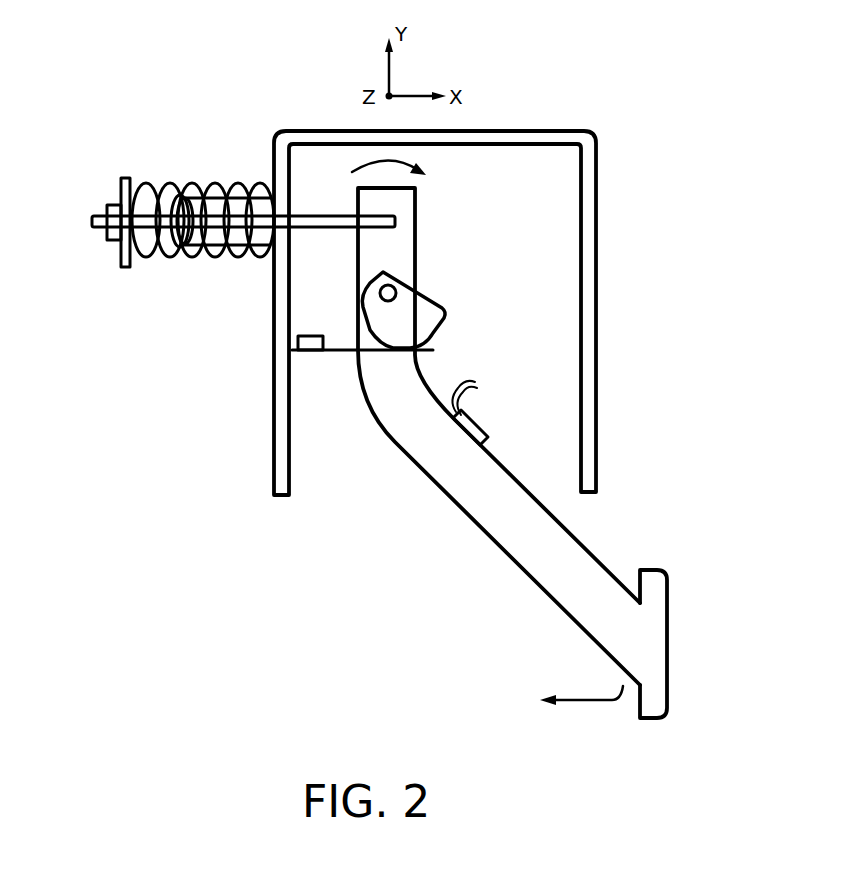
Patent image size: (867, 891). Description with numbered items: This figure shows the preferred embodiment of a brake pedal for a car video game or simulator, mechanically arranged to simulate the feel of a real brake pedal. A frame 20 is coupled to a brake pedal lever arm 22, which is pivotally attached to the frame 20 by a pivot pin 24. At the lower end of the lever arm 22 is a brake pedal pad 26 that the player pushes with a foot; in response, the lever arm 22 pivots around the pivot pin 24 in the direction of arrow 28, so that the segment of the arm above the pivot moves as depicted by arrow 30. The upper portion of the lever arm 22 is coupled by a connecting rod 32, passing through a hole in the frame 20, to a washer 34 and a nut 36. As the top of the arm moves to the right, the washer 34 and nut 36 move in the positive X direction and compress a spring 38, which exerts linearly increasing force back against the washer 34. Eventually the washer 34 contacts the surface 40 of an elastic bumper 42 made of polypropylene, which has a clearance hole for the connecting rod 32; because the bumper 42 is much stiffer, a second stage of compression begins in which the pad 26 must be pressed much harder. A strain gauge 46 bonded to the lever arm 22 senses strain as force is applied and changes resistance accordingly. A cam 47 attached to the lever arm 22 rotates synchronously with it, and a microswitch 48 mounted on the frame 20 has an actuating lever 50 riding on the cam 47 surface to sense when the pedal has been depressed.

The frame 20 is at (596, 173).
The brake pedal lever arm 22 is at (443, 472).
The pivot pin 24 is at (395, 288).
The brake pedal pad 26 is at (665, 574).
The arrow 28 is at (598, 702).
The arrow 30 is at (428, 160).
The connecting rod 32 is at (338, 230).
The washer 34 is at (122, 178).
The nut 36 is at (112, 242).
The spring 38 is at (155, 180).
The surface 40 is at (175, 248).
The elastic bumper 42 is at (210, 245).
The strain gauge 46 is at (487, 438).
The cam 47 is at (443, 309).
The microswitch 48 is at (334, 310).
The actuating lever 50 is at (372, 356).